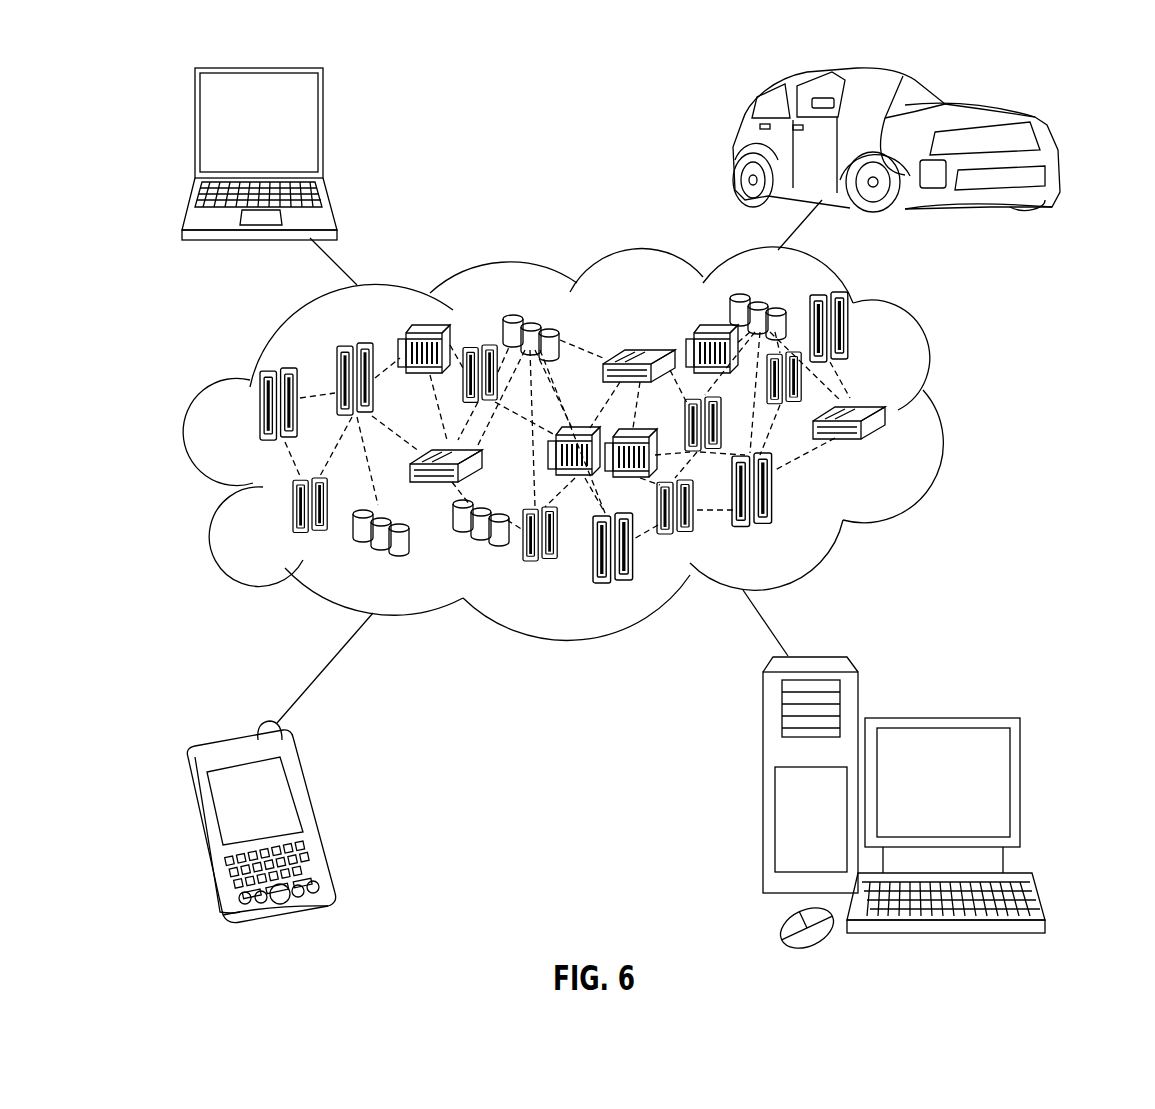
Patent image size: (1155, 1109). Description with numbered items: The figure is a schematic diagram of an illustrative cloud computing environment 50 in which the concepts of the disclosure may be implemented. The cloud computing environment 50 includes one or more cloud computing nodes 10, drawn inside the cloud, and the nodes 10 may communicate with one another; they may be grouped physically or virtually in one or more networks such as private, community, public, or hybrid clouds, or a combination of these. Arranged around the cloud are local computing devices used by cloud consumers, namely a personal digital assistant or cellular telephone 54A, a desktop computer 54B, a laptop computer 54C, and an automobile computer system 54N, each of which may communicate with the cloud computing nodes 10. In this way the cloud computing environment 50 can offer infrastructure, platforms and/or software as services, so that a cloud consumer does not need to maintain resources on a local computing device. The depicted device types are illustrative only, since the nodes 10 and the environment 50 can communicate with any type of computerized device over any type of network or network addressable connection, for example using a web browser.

The cloud computing nodes 10 is at (898, 458).
The cloud computing environment 50 is at (940, 420).
The personal digital assistant or cellular telephone 54A is at (313, 813).
The desktop computer 54B is at (940, 717).
The laptop computer 54C is at (323, 130).
The automobile computer system 54N is at (738, 148).